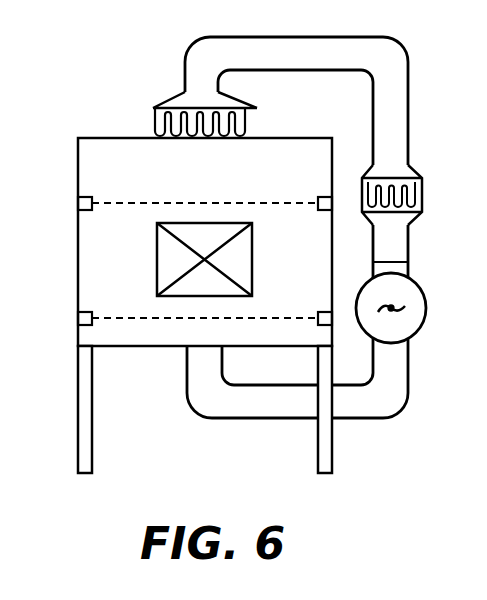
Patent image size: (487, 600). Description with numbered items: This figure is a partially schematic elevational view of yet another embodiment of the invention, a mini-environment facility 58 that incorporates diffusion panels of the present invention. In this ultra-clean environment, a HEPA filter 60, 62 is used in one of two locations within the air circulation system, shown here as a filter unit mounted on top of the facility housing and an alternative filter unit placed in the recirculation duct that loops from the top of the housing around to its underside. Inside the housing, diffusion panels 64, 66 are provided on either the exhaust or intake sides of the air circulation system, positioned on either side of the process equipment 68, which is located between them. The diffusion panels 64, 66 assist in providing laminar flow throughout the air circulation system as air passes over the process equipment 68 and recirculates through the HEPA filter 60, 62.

The mini-environment facility 58 is at (62, 261).
The HEPA filter 60 is at (155, 120).
The HEPA filter 62 is at (421, 197).
The diffusion panel 64 is at (106, 202).
The diffusion panel 66 is at (106, 317).
The process equipment 68 is at (254, 268).